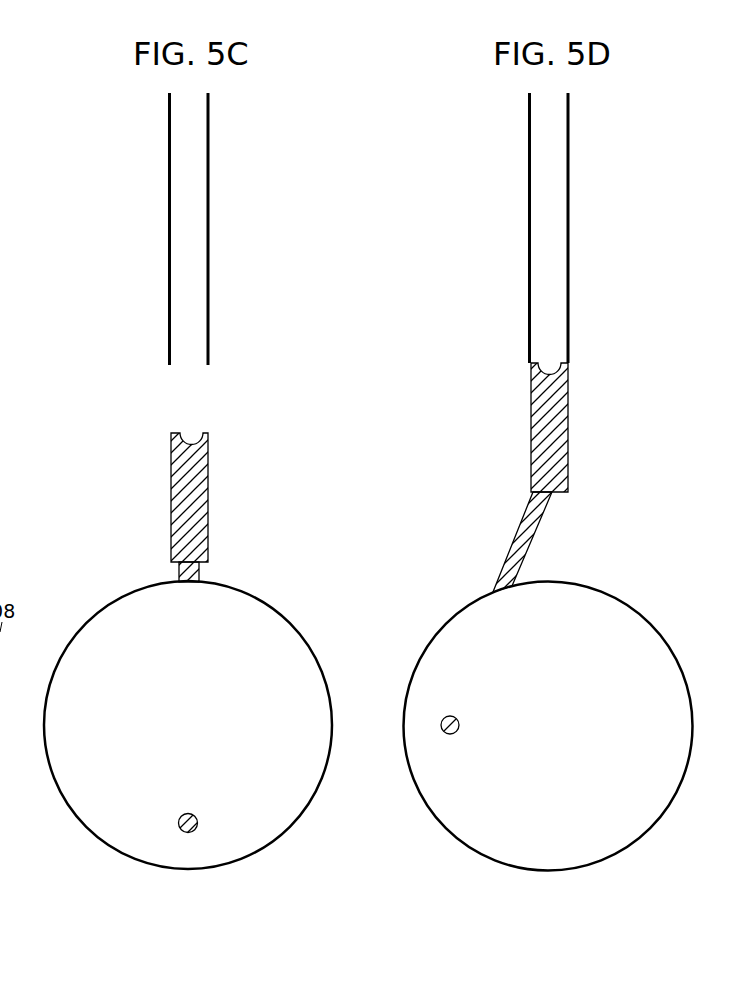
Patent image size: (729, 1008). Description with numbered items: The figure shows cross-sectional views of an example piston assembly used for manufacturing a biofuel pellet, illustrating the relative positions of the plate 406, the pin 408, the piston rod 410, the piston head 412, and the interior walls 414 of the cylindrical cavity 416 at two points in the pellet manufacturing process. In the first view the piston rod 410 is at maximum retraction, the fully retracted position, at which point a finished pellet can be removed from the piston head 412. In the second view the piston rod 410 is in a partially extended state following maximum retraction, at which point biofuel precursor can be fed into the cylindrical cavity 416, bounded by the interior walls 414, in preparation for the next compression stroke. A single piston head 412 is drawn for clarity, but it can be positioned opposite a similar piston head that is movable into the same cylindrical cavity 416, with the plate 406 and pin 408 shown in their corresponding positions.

In FIG. 5C, the plate 406 is at (85, 622).
In FIG. 5D, the plate 406 is at (447, 622).
In FIG. 5C, the pin 408 is at (180, 830).
In FIG. 5D, the pin 408 is at (441, 721).
In FIG. 5C, the piston rod 410 is at (186, 582).
In FIG. 5D, the piston rod 410 is at (532, 523).
In FIG. 5C, the piston head 412 is at (184, 472).
In FIG. 5D, the piston head 412 is at (544, 472).
In FIG. 5C, the interior walls 414 is at (168, 128).
In FIG. 5D, the interior walls 414 is at (528, 128).
In FIG. 5C, the cylindrical cavity 416 is at (204, 186).
In FIG. 5D, the cylindrical cavity 416 is at (565, 186).